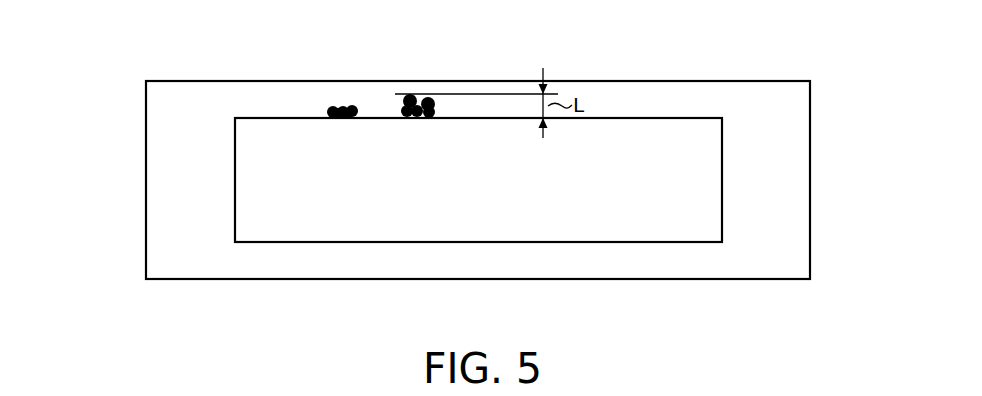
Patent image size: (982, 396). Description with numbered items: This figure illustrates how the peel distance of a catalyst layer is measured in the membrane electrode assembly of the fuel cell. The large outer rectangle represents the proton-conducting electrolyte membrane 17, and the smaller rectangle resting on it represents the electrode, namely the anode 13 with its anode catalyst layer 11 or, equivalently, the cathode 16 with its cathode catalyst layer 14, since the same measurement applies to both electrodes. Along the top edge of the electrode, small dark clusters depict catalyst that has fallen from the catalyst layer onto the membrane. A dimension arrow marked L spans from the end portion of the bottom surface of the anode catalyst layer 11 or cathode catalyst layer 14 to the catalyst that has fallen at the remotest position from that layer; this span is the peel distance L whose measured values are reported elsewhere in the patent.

The anode catalyst layer 11 is at (381, 76).
The cathode catalyst layer 14 is at (398, 109).
The anode 13 is at (399, 180).
The cathode 16 is at (235, 131).
The electrolyte membrane 17 is at (146, 180).